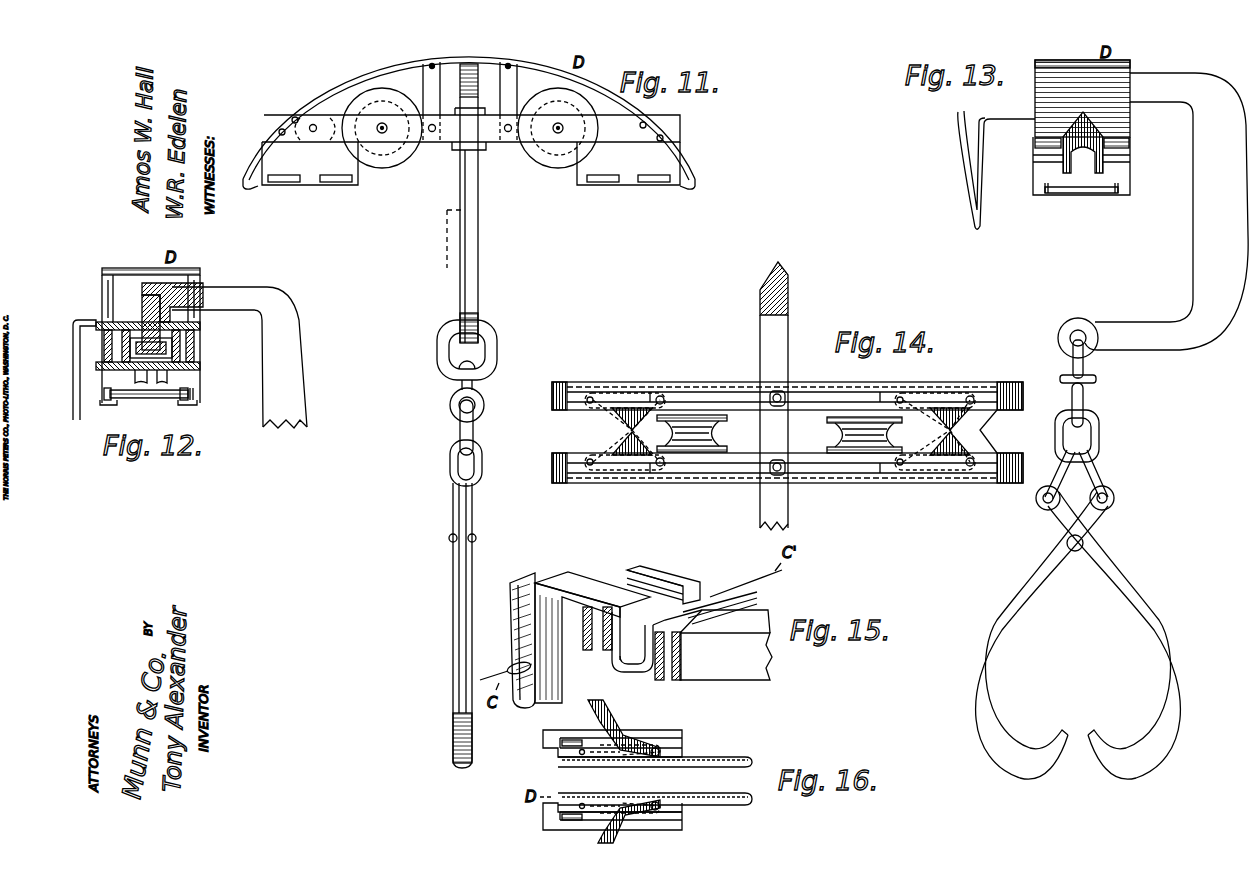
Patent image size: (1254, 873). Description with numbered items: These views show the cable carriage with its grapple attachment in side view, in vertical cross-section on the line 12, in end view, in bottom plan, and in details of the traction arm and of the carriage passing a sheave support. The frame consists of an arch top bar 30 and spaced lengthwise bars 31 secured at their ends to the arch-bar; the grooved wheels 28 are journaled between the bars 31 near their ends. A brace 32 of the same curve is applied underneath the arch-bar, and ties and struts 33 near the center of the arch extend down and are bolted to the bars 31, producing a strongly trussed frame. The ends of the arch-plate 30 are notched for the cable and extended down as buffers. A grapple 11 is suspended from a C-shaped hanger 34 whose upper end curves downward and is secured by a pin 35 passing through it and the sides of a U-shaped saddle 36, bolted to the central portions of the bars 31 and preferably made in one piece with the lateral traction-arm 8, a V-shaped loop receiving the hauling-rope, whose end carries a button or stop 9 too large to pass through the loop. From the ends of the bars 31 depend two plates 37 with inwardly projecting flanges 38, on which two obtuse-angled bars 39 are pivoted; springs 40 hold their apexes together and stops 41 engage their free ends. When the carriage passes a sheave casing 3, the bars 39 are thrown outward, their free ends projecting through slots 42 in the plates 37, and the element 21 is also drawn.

In FIG. 16, the casing 3 is at (724, 757).
In FIG. 12, the lateral traction-arm 8 is at (74, 385).
In FIG. 13, the lateral traction-arm 8 is at (994, 170).
In FIG. 14, the lateral traction-arm 8 is at (777, 451).
In FIG. 15, the lateral traction-arm 8 is at (517, 640).
In FIG. 15, the button or stop 9 is at (513, 664).
In FIG. 11, the grapple 11 is at (452, 625).
In FIG. 13, the grapple 11 is at (1078, 632).
In FIG. 11, the section line 12 is at (469, 64).
In FIG. 12, the plate 21 is at (198, 342).
In FIG. 14, the plate 21 is at (812, 480).
In FIG. 15, the plate 21 is at (712, 645).
In FIG. 11, the wheel 28 is at (470, 140).
In FIG. 13, the wheel 28 is at (1083, 149).
In FIG. 14, the wheel 28 is at (720, 433).
In FIG. 11, the arch top bar 30 is at (471, 123).
In FIG. 13, the arch top bar 30 is at (1082, 98).
In FIG. 14, the arch top bar 30 is at (784, 432).
In FIG. 14, the lengthwise bar 31 is at (752, 462).
In FIG. 15, the lengthwise bar 31 is at (692, 595).
In FIG. 11, the brace 32 is at (394, 76).
In FIG. 12, the brace 32 is at (152, 268).
In FIG. 11, the ties and struts 33 is at (441, 70).
In FIG. 12, the ties and struts 33 is at (103, 298).
In FIG. 11, the C-shaped hanger 34 is at (478, 94).
In FIG. 12, the C-shaped hanger 34 is at (239, 357).
In FIG. 13, the C-shaped hanger 34 is at (1153, 215).
In FIG. 14, the C-shaped hanger 34 is at (774, 396).
In FIG. 12, the pin 35 is at (137, 330).
In FIG. 15, the pin 35 is at (623, 590).
In FIG. 12, the saddle 36 is at (200, 366).
In FIG. 15, the saddle 36 is at (620, 665).
In FIG. 11, the plate 37 is at (471, 163).
In FIG. 12, the plate 37 is at (200, 391).
In FIG. 13, the plate 37 is at (1070, 168).
In FIG. 12, the inwardly-projecting flange 38 is at (184, 400).
In FIG. 12, the obtuse-angled bar 39 is at (152, 398).
In FIG. 13, the obtuse-angled bar 39 is at (1083, 194).
In FIG. 14, the obtuse-angled bar 39 is at (608, 420).
In FIG. 16, the obtuse-angled bar 39 is at (622, 738).
In FIG. 14, the spring 40 is at (645, 392).
In FIG. 16, the spring 40 is at (603, 745).
In FIG. 12, the stop 41 is at (192, 402).
In FIG. 14, the stop 41 is at (598, 398).
In FIG. 16, the stop 41 is at (580, 805).
In FIG. 11, the slot 42 is at (338, 183).